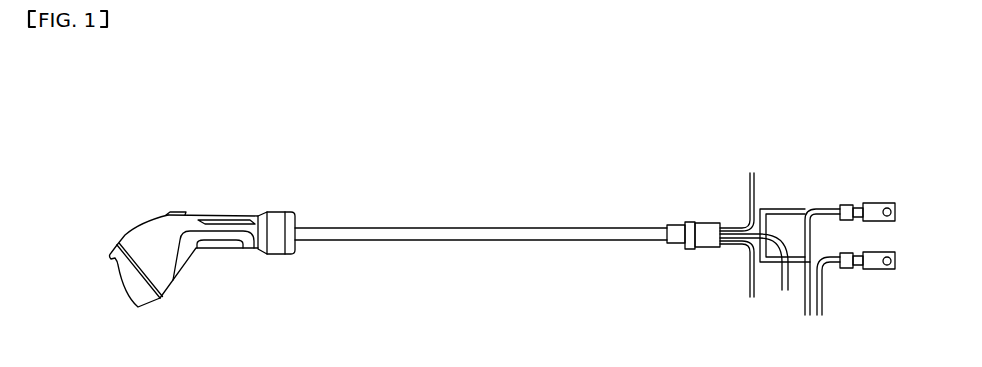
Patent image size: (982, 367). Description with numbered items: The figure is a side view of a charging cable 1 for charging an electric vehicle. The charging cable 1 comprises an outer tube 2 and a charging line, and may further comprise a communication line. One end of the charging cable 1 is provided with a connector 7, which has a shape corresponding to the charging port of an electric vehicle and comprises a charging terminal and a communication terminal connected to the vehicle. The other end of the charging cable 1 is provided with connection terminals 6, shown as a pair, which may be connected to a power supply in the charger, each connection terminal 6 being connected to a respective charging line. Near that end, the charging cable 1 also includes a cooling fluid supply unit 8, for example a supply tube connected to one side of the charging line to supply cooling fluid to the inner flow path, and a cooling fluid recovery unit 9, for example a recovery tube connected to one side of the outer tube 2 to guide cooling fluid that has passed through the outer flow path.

The charging cable 1 is at (532, 170).
The outer tube 2 is at (378, 228).
The connection terminal 6 is at (879, 203).
The connector 7 is at (150, 231).
The cooling fluid supply unit 8 is at (782, 223).
The cooling fluid recovery unit 9 is at (748, 277).